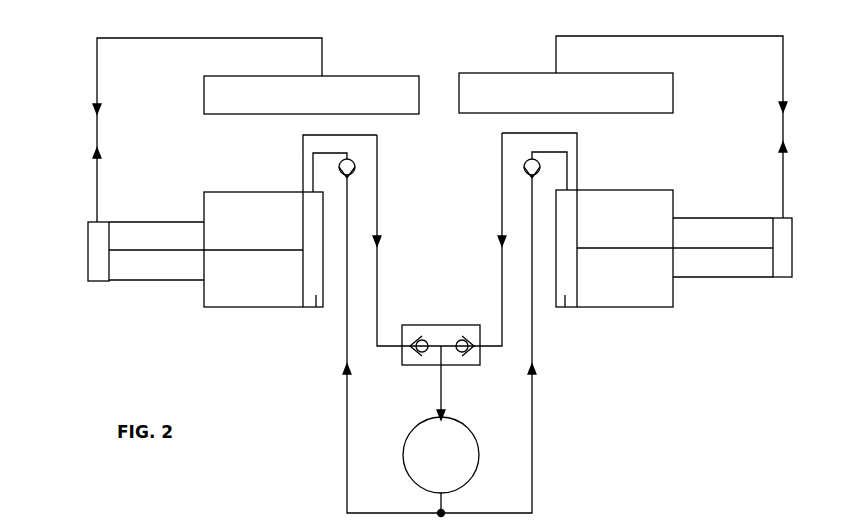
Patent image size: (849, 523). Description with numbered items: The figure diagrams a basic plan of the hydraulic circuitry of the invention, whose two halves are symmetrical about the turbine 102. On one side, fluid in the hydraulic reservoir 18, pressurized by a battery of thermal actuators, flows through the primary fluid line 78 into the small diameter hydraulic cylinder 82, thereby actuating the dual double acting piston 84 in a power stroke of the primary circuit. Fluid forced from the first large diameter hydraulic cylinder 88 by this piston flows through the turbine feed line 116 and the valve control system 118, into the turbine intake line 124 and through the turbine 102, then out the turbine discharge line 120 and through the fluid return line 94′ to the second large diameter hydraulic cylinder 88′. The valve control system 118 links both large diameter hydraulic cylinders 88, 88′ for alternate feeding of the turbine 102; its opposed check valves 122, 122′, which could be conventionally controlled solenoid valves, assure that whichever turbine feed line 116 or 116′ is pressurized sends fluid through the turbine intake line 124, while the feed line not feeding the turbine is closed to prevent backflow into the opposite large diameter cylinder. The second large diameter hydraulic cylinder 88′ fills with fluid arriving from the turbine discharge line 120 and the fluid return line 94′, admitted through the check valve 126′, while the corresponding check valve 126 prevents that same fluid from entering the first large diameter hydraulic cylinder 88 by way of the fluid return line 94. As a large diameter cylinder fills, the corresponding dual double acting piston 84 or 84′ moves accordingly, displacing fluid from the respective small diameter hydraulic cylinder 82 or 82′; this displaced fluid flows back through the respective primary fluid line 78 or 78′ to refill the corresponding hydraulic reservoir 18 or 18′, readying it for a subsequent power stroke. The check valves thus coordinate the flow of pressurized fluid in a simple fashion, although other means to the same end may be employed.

The primary fluid line 78 is at (97, 75).
The primary fluid line 78′ is at (783, 64).
The hydraulic reservoir 18 is at (333, 106).
The hydraulic reservoir 18′ is at (565, 106).
The small diameter hydraulic cylinder 82 is at (100, 258).
The small diameter hydraulic cylinder 82′ is at (783, 250).
The dual double acting piston 84 is at (220, 250).
The dual double acting piston 84′ is at (661, 248).
The first large diameter hydraulic cylinder 88 is at (316, 300).
The second large diameter hydraulic cylinder 88′ is at (565, 300).
The check valve 126 is at (352, 160).
The check valve 126′ is at (527, 160).
The turbine feed line 116 is at (377, 266).
The turbine feed line 116′ is at (503, 266).
The valve control system 118 is at (446, 318).
The check valve 122 is at (425, 358).
The check valve 122′ is at (458, 358).
The turbine intake line 124 is at (441, 395).
The turbine 102 is at (457, 468).
The turbine discharge line 120 is at (441, 500).
The fluid return line 94 is at (347, 443).
The fluid return line 94′ is at (533, 440).